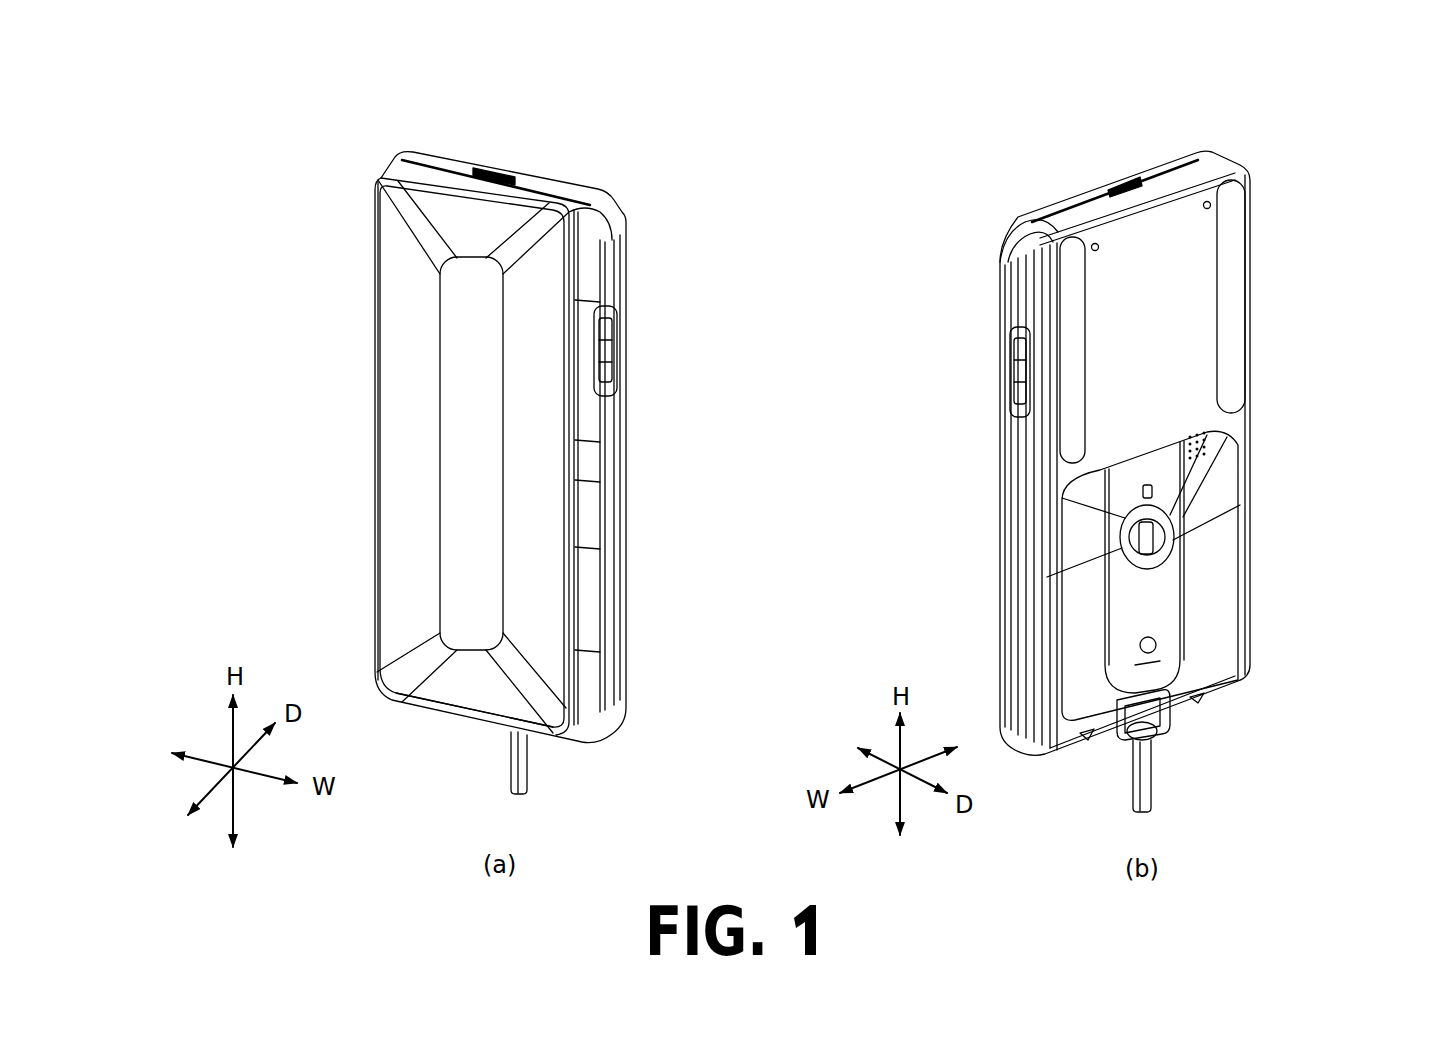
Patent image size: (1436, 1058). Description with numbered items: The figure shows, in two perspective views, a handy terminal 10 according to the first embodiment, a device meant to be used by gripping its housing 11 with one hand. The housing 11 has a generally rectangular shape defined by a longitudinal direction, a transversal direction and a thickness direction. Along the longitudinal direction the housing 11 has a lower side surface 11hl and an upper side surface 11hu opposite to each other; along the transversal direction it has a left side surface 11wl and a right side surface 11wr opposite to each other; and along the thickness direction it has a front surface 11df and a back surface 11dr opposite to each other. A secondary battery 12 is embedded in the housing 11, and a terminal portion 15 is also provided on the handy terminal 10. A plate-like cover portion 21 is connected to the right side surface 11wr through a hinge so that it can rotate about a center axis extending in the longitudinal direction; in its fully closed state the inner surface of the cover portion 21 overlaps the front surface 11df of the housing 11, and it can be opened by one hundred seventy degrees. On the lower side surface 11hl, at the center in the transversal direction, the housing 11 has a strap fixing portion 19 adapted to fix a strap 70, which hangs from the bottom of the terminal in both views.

The handy terminal 10 is at (337, 183).
The housing 11 is at (430, 157).
The upper side surface 11hu is at (463, 167).
The back surface 11dr is at (553, 175).
The front surface 11df is at (415, 470).
The left side surface 11wl is at (375, 422).
The right side surface 11wr is at (625, 497).
The lower side surface 11hl is at (467, 723).
The cover portion 21 is at (392, 292).
The terminal portion 15 is at (617, 355).
The secondary battery 12 is at (1155, 590).
The strap fixing portion 19 is at (1153, 723).
The strap 70 is at (525, 768).